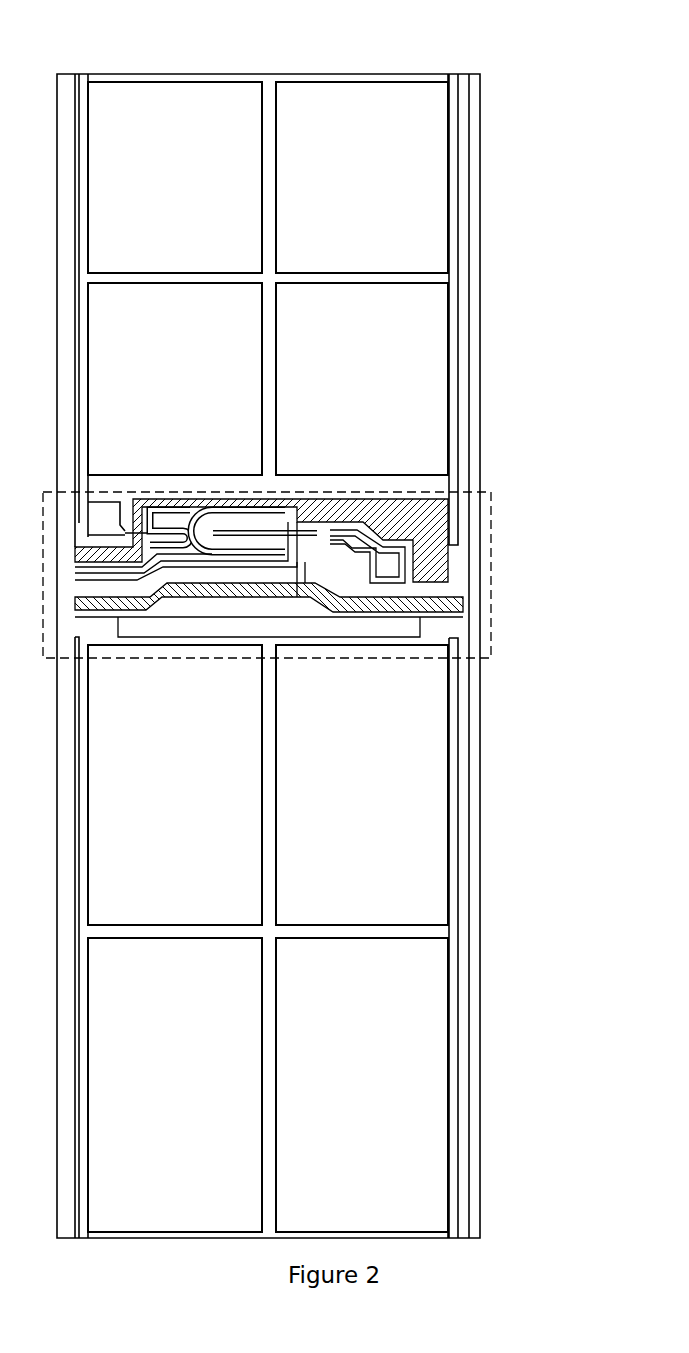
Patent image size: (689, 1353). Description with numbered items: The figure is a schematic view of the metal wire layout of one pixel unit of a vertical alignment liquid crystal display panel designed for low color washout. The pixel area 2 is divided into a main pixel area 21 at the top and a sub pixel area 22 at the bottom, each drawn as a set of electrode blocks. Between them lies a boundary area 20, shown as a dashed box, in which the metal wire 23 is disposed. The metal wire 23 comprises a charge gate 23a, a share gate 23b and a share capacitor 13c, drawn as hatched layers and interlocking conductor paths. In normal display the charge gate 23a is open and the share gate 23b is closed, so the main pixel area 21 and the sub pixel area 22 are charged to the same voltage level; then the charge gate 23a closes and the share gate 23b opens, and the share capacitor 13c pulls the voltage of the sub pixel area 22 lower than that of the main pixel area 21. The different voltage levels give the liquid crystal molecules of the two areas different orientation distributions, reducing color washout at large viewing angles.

The pixel area 2 is at (281, 61).
The boundary area 20 is at (493, 487).
The main pixel area 21 is at (430, 163).
The sub pixel area 22 is at (430, 802).
The metal wire 23 is at (338, 556).
The charge gate 23a is at (442, 560).
The share gate 23b is at (445, 603).
The share capacitor 13c is at (397, 625).